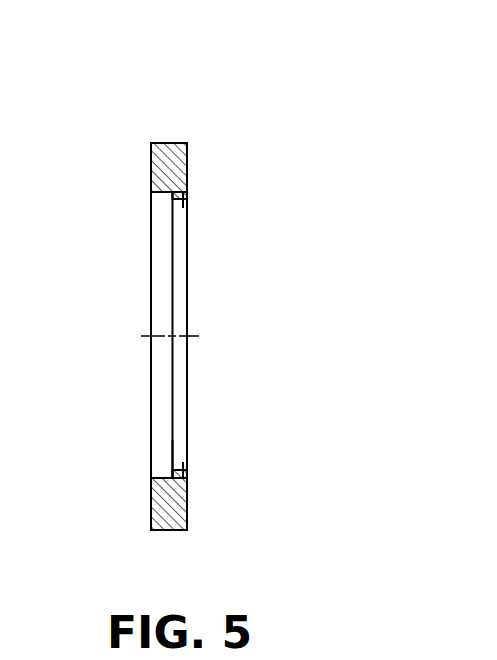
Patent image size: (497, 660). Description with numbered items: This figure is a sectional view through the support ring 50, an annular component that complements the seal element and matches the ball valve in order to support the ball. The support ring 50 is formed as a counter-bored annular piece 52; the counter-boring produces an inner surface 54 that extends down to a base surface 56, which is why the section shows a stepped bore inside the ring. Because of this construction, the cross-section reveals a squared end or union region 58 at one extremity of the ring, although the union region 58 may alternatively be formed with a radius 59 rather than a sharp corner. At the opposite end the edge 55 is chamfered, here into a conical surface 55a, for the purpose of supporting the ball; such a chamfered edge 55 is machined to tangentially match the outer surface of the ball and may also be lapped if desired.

The support ring 50 is at (182, 133).
The counter-bored annular piece 52 is at (137, 210).
The inner surface 54 is at (165, 477).
The edge 55 is at (184, 201).
The conical surface 55a is at (184, 470).
The base surface 56 is at (172, 195).
The union region 58 is at (201, 544).
The radius 59 is at (171, 476).